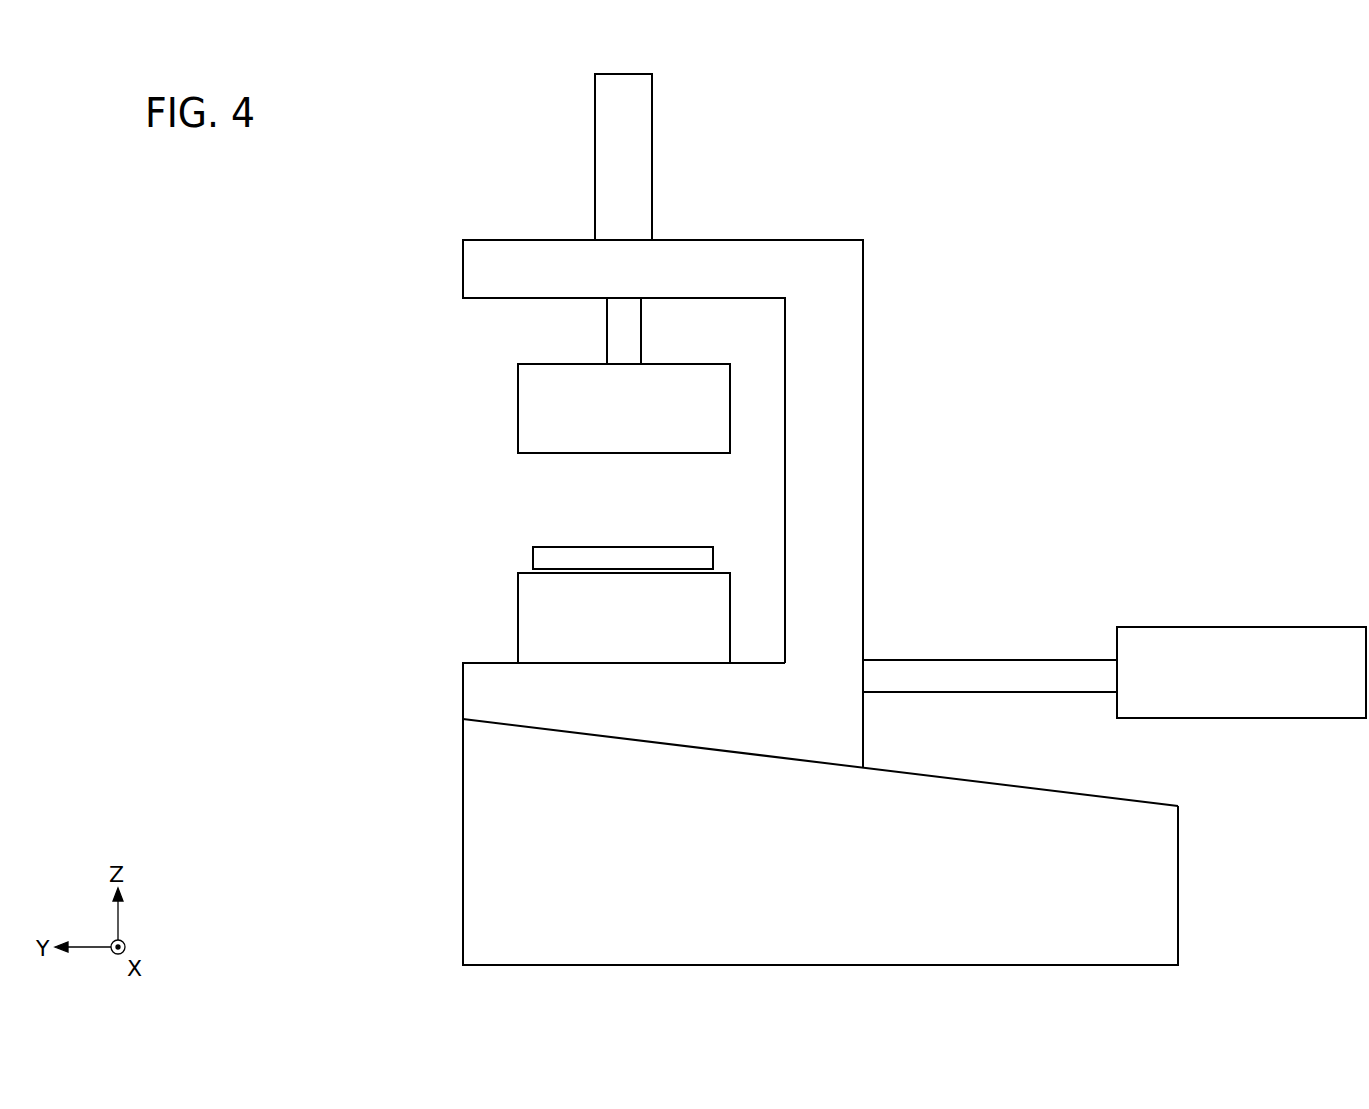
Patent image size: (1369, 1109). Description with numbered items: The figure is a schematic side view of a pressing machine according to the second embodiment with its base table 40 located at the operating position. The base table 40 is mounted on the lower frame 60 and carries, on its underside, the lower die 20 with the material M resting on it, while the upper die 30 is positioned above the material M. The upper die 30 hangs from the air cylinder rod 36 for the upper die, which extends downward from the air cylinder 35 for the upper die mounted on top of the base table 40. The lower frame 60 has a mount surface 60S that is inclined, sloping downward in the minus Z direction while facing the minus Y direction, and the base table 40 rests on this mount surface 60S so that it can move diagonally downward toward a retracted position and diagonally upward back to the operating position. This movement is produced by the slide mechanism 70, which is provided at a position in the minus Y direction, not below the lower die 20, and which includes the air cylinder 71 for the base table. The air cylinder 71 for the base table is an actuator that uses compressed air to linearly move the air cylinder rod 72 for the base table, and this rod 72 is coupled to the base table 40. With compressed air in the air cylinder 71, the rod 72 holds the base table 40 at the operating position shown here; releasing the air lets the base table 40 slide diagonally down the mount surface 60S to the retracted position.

The air cylinder for the upper die 35 is at (602, 152).
The base table 40 is at (470, 275).
The air cylinder rod for the upper die 36 is at (612, 332).
The upper die 30 is at (523, 408).
The material M is at (538, 558).
The lower die 20 is at (523, 620).
The lower frame 60 is at (468, 842).
The mount surface 60S is at (1005, 777).
The air cylinder rod for the base table 72 is at (1013, 668).
The slide mechanism 70 is at (1241, 631).
The air cylinder for the base table 71 is at (1235, 636).